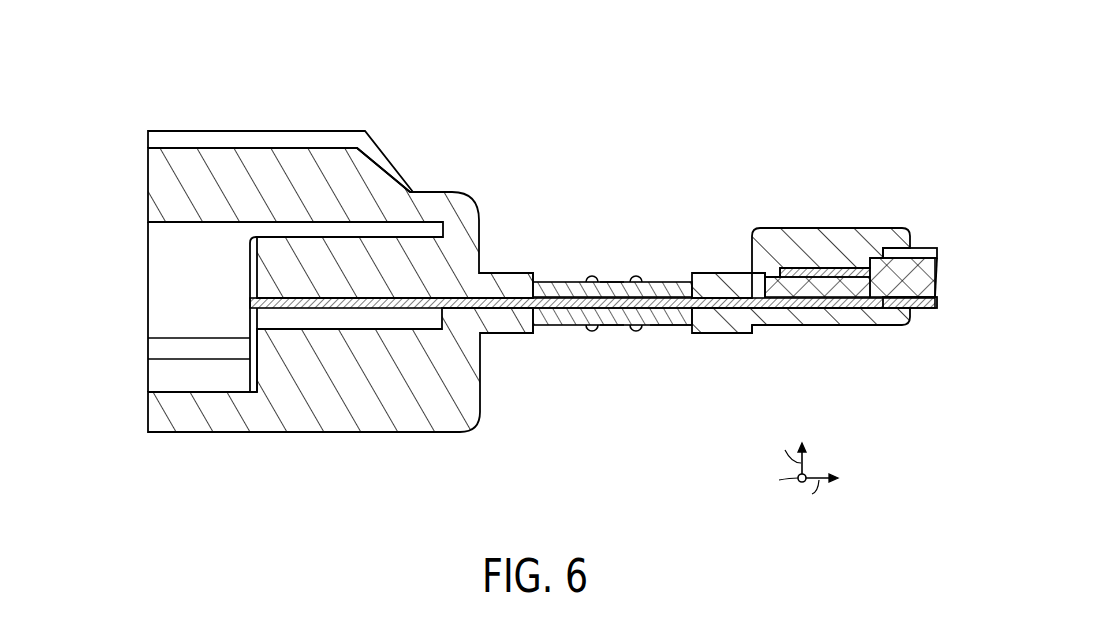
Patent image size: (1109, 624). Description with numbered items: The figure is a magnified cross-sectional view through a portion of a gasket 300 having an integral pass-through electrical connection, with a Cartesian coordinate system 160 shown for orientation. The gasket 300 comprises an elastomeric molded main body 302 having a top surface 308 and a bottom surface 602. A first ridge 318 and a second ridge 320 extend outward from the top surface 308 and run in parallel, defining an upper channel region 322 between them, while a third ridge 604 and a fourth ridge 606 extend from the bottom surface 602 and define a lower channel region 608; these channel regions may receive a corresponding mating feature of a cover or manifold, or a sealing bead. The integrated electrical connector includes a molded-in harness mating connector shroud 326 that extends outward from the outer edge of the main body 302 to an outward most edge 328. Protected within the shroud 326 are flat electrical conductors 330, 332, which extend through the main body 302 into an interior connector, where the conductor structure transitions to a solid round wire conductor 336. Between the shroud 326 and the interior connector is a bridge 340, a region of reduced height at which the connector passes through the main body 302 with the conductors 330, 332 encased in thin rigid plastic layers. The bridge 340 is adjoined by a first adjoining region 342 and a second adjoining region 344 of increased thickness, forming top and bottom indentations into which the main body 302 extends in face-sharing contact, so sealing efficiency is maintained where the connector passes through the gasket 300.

The gasket 300 is at (526, 229).
The main body 302 is at (721, 271).
The top surface 308 is at (672, 280).
The first ridge 318 is at (588, 274).
The second ridge 320 is at (636, 276).
The upper channel region 322 is at (608, 280).
The molded-in harness mating connector shroud 326 is at (280, 140).
The outward most edge 328 is at (148, 148).
The electrical conductor 330 is at (250, 299).
The electrical conductor 332 is at (862, 228).
The solid wire conductor 336 is at (940, 250).
The bridge 340 is at (565, 327).
The first adjoining region 342 is at (490, 272).
The second adjoining region 344 is at (730, 335).
The bottom surface 602 is at (665, 333).
The third ridge 604 is at (636, 333).
The fourth ridge 606 is at (592, 334).
The lower channel region 608 is at (608, 331).
The Cartesian coordinate system 160 is at (843, 447).